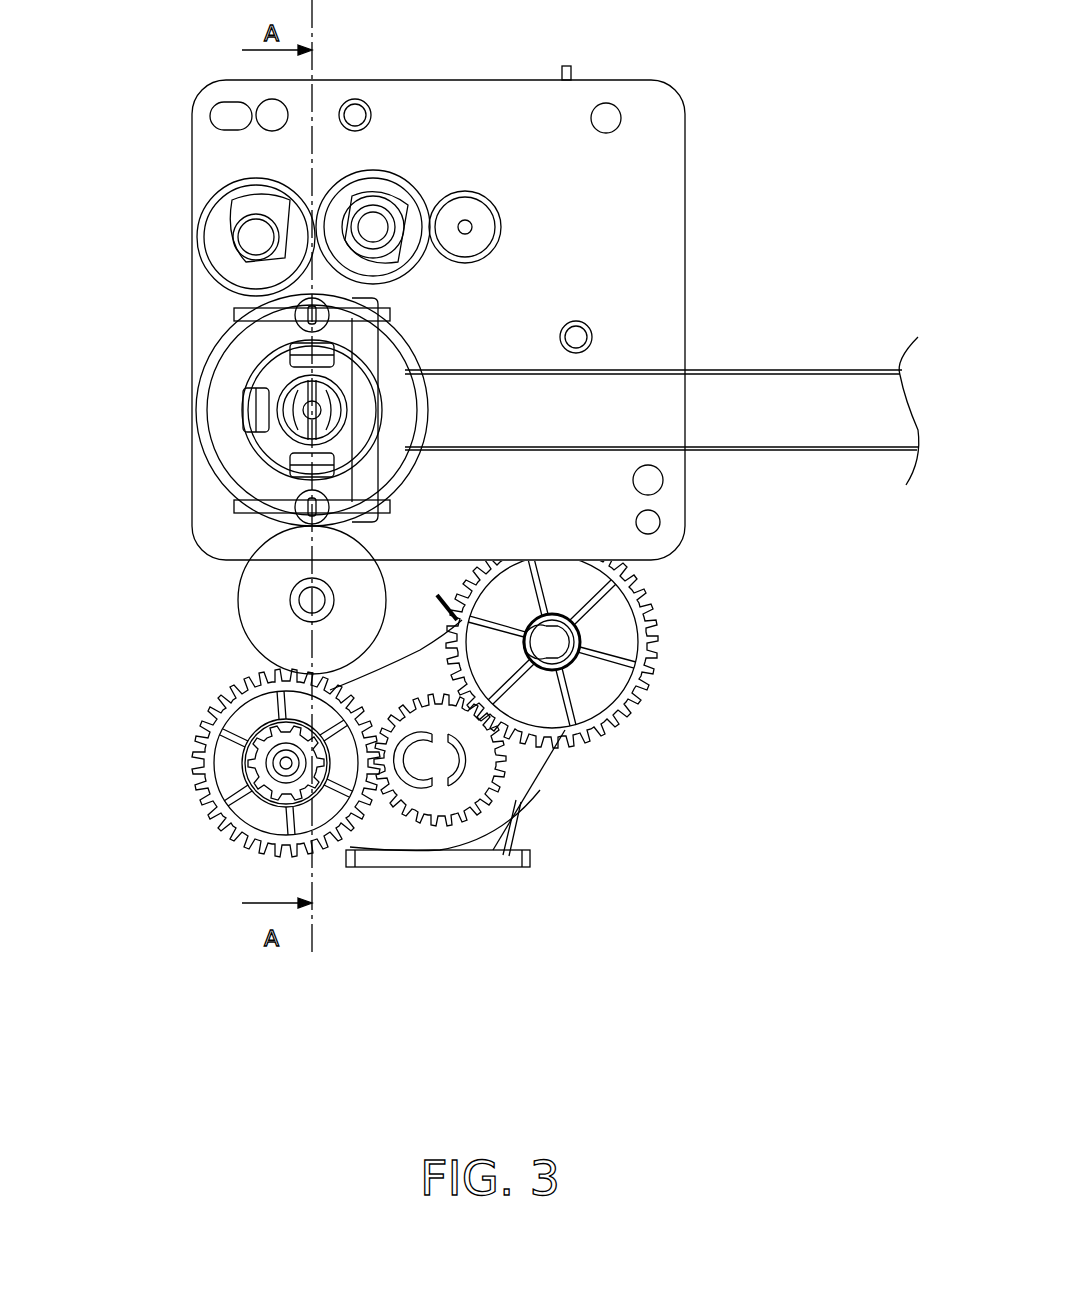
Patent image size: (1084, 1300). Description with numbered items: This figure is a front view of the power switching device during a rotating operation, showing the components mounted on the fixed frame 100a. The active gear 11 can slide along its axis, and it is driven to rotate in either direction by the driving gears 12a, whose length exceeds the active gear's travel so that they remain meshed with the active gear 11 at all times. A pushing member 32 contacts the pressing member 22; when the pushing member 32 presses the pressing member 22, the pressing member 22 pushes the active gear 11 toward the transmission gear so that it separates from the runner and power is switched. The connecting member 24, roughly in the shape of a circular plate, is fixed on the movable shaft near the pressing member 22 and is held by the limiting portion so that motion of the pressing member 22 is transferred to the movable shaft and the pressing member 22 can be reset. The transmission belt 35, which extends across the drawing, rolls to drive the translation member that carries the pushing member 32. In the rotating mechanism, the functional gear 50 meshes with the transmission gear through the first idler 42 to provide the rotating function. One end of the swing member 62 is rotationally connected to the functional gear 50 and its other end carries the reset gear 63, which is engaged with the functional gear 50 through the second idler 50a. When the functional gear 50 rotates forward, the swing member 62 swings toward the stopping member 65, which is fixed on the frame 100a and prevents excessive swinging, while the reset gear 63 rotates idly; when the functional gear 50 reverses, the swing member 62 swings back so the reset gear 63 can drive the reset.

The frame 100a is at (640, 157).
The driving gear 12a is at (357, 178).
The active gear 11 is at (400, 345).
The pressing member 22 is at (228, 373).
The connecting member 24 is at (263, 440).
The pushing member 32 is at (240, 510).
The transmission belt 35 is at (803, 447).
The first idler 42 is at (265, 612).
The functional gear 50 is at (213, 758).
The reset gear 63 is at (608, 675).
The swing member 62 is at (520, 768).
The second idler 50a is at (472, 793).
The stopping member 65 is at (492, 860).